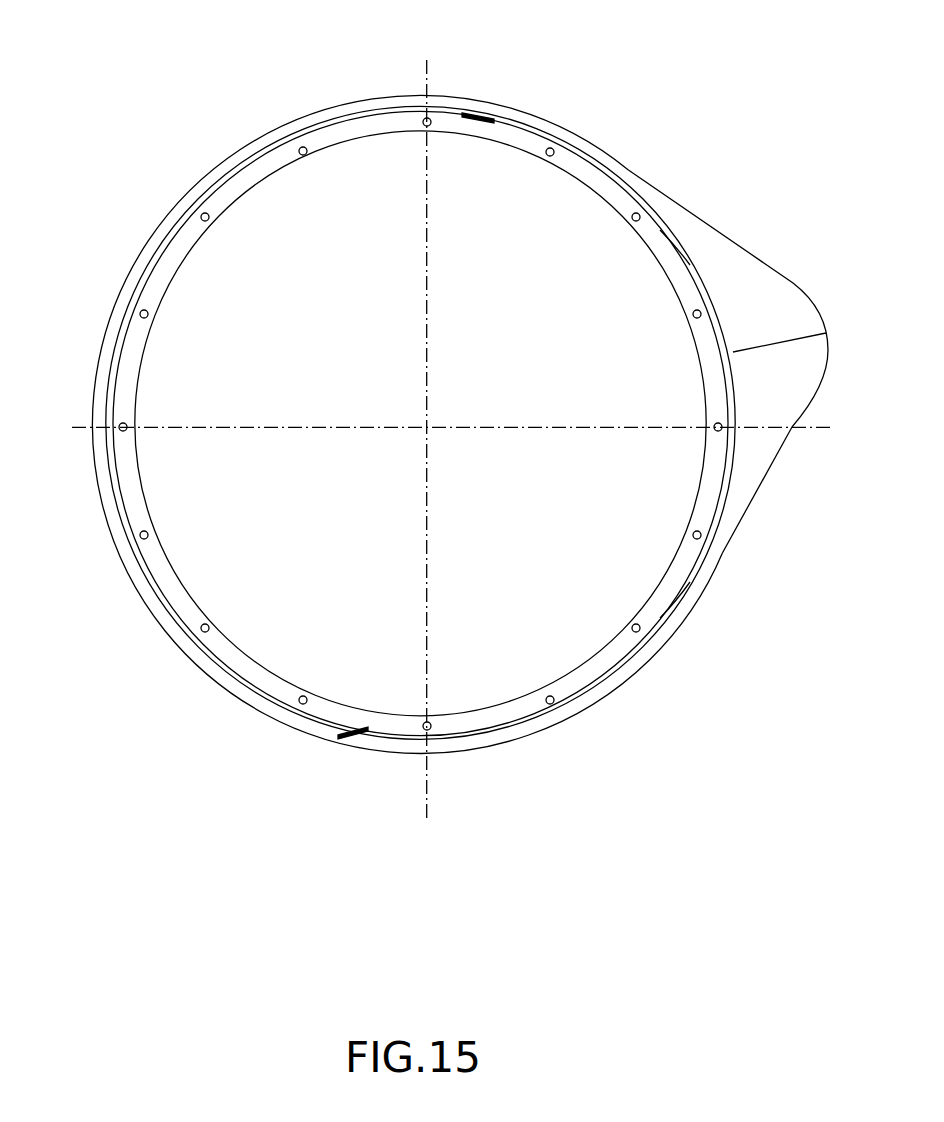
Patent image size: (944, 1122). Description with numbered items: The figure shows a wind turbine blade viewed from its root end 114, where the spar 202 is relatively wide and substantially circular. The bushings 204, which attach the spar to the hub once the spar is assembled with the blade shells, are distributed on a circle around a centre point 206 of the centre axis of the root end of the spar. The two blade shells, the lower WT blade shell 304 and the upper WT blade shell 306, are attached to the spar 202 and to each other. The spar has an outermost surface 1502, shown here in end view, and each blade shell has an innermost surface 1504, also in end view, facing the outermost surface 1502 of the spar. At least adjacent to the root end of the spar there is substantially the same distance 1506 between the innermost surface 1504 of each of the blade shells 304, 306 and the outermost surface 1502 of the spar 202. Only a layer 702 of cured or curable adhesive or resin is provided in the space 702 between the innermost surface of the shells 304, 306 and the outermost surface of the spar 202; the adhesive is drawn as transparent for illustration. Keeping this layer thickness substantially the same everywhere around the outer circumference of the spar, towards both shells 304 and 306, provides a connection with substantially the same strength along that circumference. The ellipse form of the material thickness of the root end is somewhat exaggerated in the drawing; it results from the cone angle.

The root end 114 is at (245, 888).
The WT blade spar 202 is at (170, 290).
The bushings 204 is at (640, 215).
The centre point 206 is at (427, 428).
The lower WT blade shell 304 is at (738, 533).
The upper WT blade shell 306 is at (355, 102).
The space with layer of adhesive 702 is at (262, 155).
The outermost surface 1502 is at (538, 135).
The innermost surface 1504 is at (678, 245).
The distance 1506 is at (470, 160).